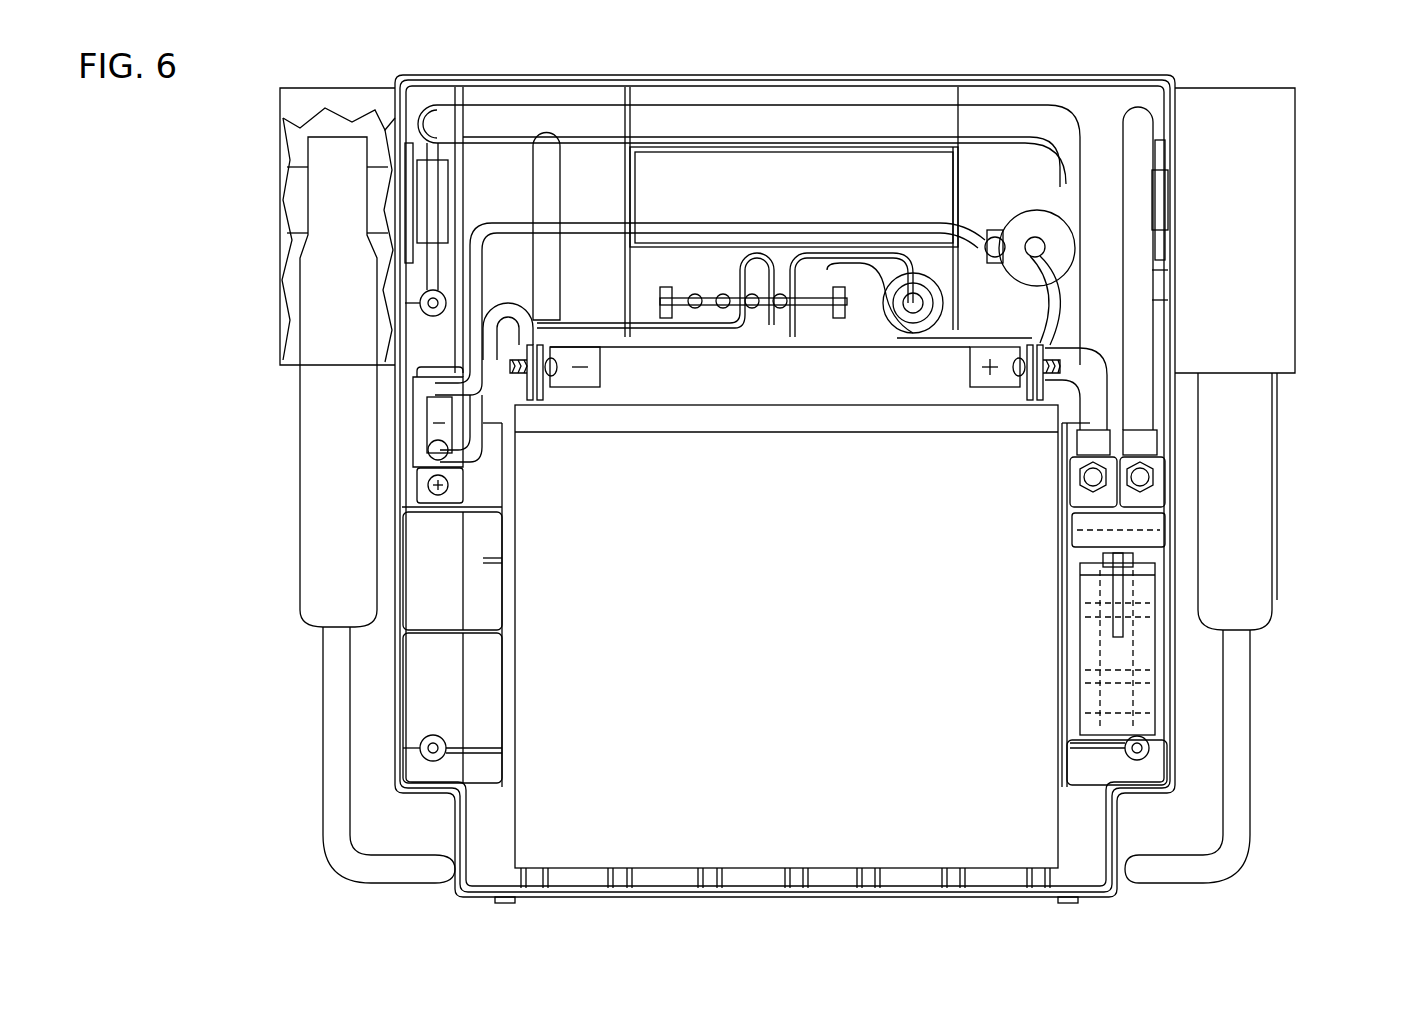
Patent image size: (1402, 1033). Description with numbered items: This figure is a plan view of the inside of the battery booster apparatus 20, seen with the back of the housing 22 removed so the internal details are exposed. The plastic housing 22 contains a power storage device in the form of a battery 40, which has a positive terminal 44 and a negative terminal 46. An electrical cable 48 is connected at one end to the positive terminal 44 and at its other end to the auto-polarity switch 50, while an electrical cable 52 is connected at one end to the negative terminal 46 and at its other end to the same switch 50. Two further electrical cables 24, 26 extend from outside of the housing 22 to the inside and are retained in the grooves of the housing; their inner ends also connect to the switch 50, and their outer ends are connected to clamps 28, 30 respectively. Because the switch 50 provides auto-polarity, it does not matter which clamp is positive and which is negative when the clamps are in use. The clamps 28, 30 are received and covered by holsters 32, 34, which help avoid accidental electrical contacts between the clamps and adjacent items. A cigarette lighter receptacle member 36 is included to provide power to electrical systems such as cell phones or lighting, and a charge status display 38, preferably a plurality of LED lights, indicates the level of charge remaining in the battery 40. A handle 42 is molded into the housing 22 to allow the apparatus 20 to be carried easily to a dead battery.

The battery booster apparatus 20 is at (592, 58).
The housing 22 is at (1086, 78).
The electrical cable 24 is at (607, 131).
The electrical cable 26 is at (1154, 224).
The clamp 28 is at (315, 437).
The clamp 30 is at (1260, 482).
The holster 32 is at (290, 108).
The holster 34 is at (1278, 160).
The cigarette lighter receptacle member 36 is at (1022, 204).
The charge status display 38 is at (810, 328).
The battery 40 is at (803, 636).
The handle 42 is at (903, 97).
The positive terminal 44 is at (966, 372).
The negative terminal 46 is at (595, 372).
The electrical cable 48 is at (1110, 410).
The auto-polarity switch 50 is at (1165, 661).
The electrical cable 52 is at (562, 268).